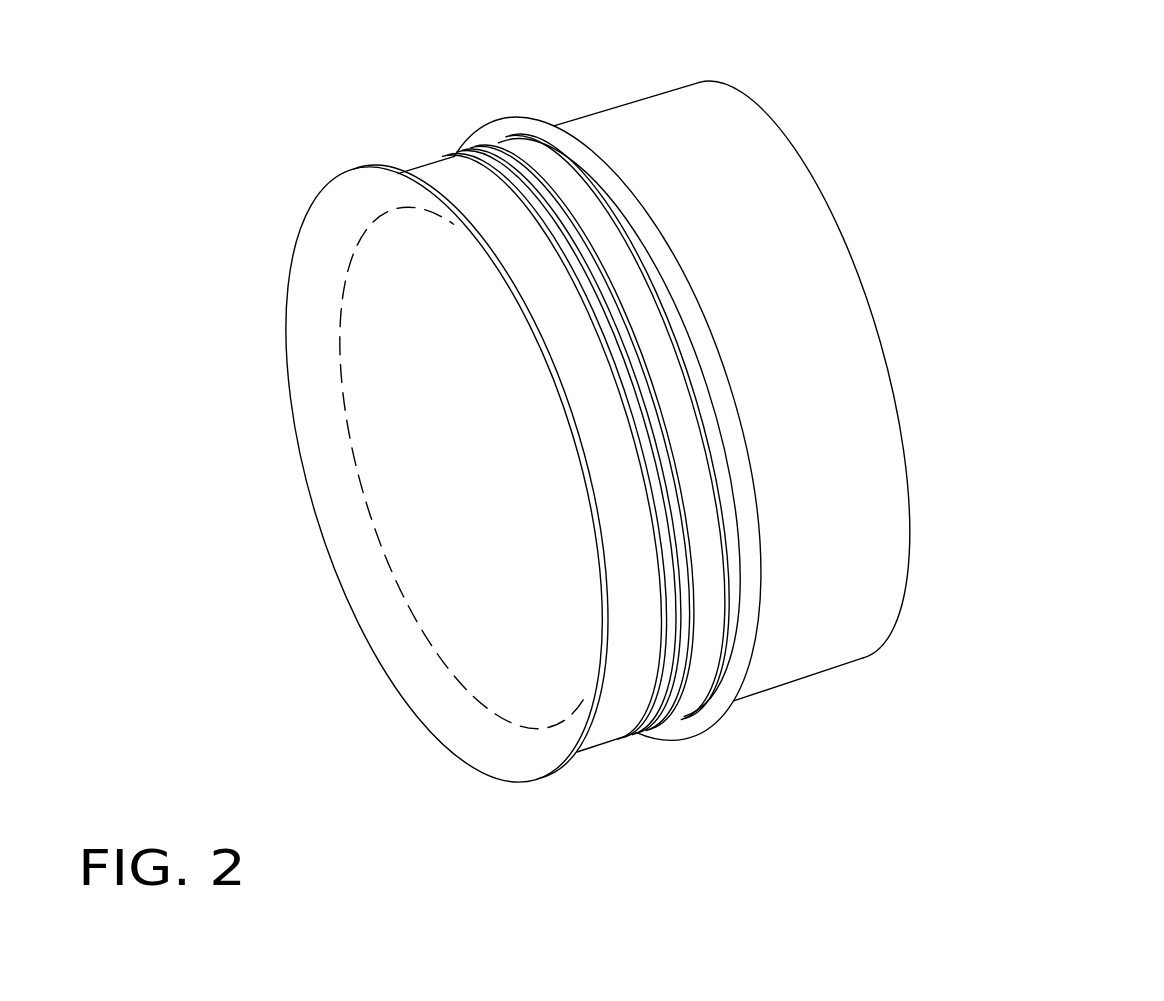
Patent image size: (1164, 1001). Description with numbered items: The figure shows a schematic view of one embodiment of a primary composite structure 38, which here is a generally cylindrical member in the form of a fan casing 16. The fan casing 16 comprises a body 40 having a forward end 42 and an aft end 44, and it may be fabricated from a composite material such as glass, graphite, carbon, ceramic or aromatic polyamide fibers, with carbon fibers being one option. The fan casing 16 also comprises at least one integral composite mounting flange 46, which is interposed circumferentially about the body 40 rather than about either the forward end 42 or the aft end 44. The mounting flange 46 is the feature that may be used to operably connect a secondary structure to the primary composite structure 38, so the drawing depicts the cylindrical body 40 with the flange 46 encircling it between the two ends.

The primary composite structure 38 is at (1002, 66).
The fan casing 16 is at (905, 624).
The body 40 is at (749, 270).
The forward end 42 is at (248, 390).
The aft end 44 is at (812, 142).
The integral composite mounting flange 46 is at (704, 736).